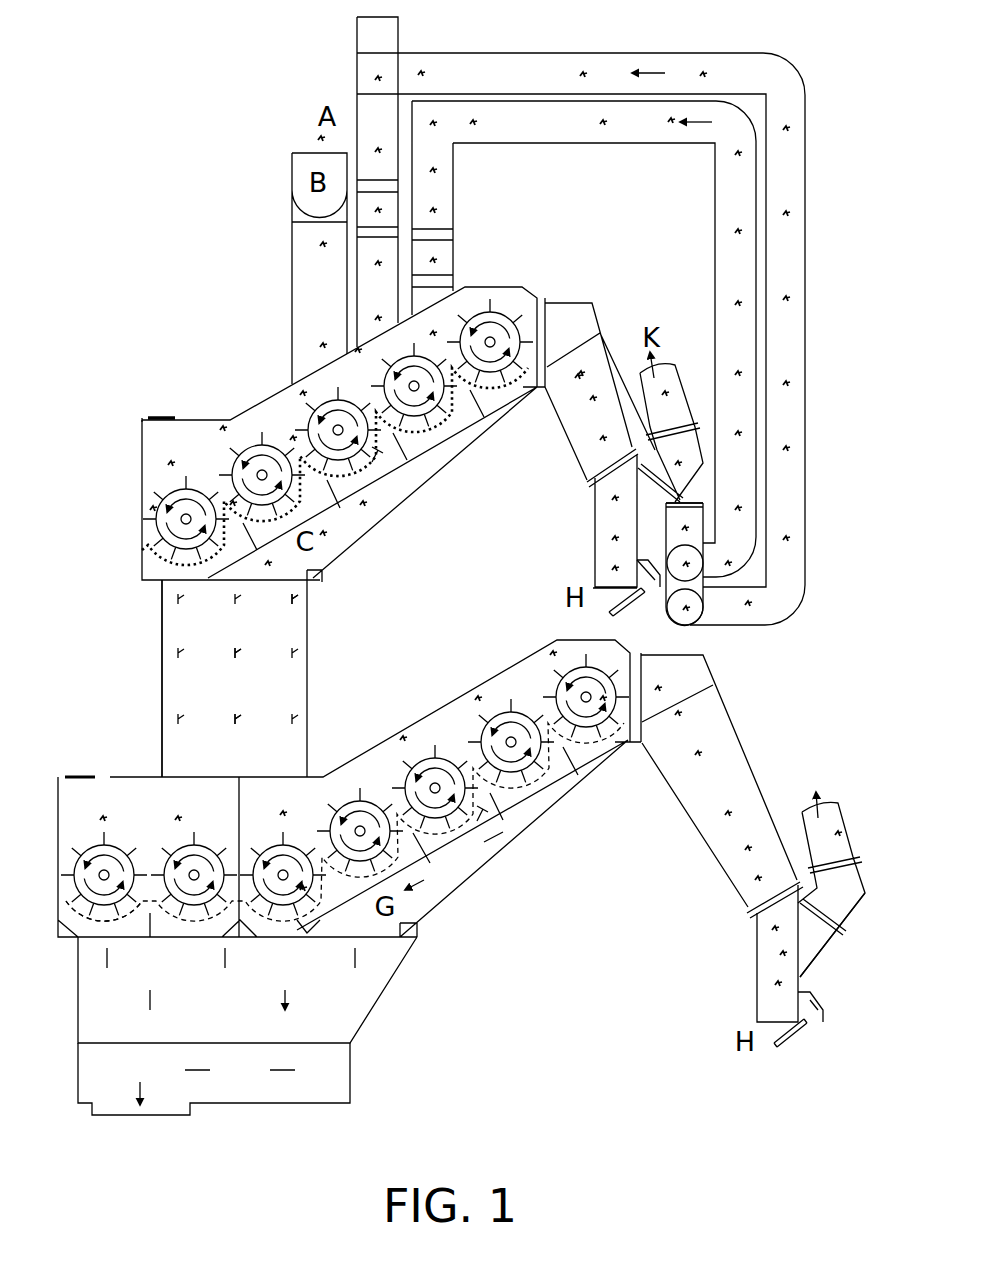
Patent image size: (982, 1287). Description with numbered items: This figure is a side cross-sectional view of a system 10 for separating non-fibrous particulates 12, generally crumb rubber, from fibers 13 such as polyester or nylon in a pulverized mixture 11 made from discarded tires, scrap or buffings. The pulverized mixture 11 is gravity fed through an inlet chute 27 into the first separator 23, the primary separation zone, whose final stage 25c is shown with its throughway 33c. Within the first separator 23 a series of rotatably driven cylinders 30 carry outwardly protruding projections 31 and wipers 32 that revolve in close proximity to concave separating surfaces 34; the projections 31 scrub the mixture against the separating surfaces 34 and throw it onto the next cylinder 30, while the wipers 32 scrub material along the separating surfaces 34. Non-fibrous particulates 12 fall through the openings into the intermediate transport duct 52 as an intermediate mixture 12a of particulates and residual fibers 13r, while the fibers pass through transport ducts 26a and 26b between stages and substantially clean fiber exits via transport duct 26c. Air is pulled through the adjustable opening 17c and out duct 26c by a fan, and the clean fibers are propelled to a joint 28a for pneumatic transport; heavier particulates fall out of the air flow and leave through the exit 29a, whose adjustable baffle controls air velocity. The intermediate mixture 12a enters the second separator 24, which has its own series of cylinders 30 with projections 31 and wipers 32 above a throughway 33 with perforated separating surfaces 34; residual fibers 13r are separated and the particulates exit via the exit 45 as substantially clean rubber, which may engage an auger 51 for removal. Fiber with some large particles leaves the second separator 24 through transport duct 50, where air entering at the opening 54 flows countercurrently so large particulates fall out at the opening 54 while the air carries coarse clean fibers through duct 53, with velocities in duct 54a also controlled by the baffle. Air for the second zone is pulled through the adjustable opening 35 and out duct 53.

The system 10 is at (163, 103).
The pulverized mixture 11 is at (320, 135).
The non-fibrous particulates 12 is at (200, 962).
The intermediate mixture 12a is at (235, 676).
The fibers 13 is at (663, 397).
The residual fibers 13r is at (211, 740).
The adjustable opening 17c is at (185, 417).
The first separator 23 is at (142, 407).
The second separator 24 is at (55, 765).
The stage 25c is at (142, 427).
The transport duct 26a is at (503, 143).
The transport duct 26b is at (497, 53).
The transport duct 26c is at (695, 395).
The inlet chute 27 is at (322, 278).
The joint 28a is at (603, 520).
The exit 29a is at (612, 598).
The cylinders 30 is at (235, 468).
The projections 31 is at (156, 488).
The wipers 32 is at (187, 480).
The throughway 33 is at (67, 905).
The throughway 33c is at (152, 547).
The separating surfaces 34 is at (383, 453).
The adjustable opening 35 is at (103, 770).
The exit 45 is at (375, 1003).
The transport duct 50 is at (703, 673).
The auger 51 is at (352, 1090).
The intermediate transport duct 52 is at (160, 660).
The duct or bend 53 is at (818, 958).
The opening 54 is at (772, 1040).
The duct 54a is at (765, 972).